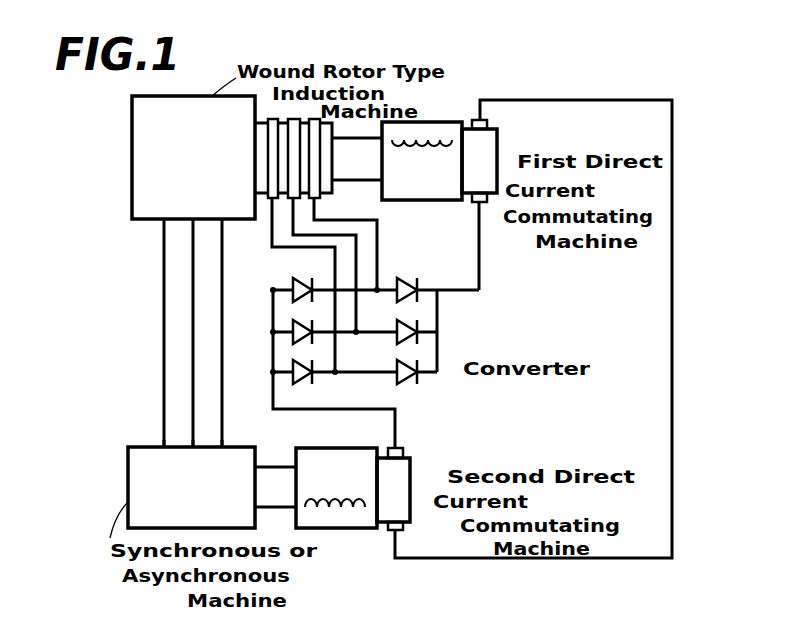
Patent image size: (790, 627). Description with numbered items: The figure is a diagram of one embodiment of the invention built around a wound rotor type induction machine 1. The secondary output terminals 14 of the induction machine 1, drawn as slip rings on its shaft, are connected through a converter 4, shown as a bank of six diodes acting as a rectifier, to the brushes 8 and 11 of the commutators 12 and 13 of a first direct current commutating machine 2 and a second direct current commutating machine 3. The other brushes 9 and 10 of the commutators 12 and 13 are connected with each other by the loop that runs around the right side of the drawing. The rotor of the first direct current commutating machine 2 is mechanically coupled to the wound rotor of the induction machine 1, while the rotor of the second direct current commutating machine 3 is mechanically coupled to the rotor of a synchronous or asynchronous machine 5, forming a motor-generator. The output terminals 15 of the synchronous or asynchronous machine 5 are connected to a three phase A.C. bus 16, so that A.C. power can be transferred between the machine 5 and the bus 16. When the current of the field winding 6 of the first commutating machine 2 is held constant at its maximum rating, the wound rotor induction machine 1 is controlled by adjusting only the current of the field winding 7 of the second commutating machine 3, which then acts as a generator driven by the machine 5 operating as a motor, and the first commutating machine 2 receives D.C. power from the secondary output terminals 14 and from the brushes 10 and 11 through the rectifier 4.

The wound rotor type induction machine 1 is at (193, 157).
The first direct current commutating machine 2 is at (422, 161).
The second direct current commutating machine 3 is at (336, 488).
The converter 4 is at (374, 331).
The synchronous or asynchronous machine 5 is at (191, 487).
The field winding 6 is at (420, 140).
The field winding 7 is at (340, 505).
The brush 8 is at (476, 203).
The brush 9 is at (488, 124).
The brush 10 is at (398, 531).
The brush 11 is at (404, 455).
The commutator 12 is at (498, 164).
The commutator 13 is at (411, 484).
The secondary output terminals 14 is at (320, 200).
The output terminals 15 is at (222, 446).
The three phase A.C. bus 16 is at (222, 306).